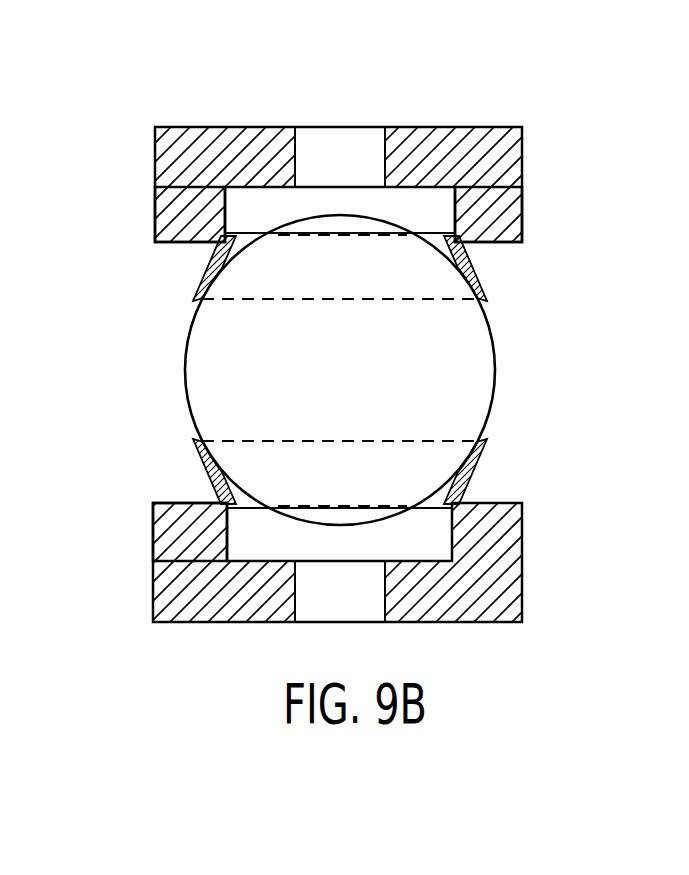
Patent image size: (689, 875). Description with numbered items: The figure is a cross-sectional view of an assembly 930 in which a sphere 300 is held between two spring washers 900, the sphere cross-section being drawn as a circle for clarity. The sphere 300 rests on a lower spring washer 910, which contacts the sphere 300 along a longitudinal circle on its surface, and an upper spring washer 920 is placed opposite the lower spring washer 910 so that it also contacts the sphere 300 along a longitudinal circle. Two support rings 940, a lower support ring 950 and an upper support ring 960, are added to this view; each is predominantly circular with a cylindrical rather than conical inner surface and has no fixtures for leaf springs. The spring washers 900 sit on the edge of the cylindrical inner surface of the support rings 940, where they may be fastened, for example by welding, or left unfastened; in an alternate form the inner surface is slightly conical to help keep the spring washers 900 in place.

The assembly 930 is at (530, 102).
The upper support ring 960 is at (528, 195).
The support rings 940 is at (155, 192).
The lower support ring 950 is at (527, 553).
The sphere 300 is at (497, 372).
The spring washers 900 is at (193, 288).
The upper spring washer 920 is at (487, 282).
The lower spring washer 910 is at (490, 443).